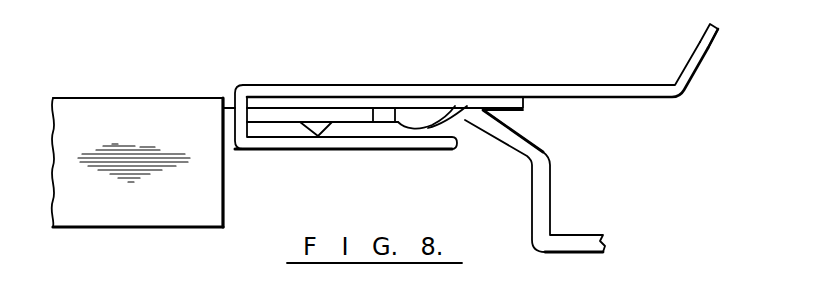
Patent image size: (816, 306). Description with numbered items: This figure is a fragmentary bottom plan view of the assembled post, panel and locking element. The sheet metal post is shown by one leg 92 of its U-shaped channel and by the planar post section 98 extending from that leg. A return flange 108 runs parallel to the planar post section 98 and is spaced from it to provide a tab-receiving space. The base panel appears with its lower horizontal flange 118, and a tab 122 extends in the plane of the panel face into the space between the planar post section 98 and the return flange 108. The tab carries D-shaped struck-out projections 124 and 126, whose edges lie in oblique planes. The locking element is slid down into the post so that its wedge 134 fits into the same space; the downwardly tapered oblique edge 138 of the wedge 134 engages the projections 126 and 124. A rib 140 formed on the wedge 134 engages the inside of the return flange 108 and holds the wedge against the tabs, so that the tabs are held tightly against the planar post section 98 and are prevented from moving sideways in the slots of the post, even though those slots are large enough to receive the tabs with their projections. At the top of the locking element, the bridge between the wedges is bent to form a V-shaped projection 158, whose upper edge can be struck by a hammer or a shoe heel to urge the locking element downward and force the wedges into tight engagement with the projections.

The leg 92 is at (705, 57).
The planar post section 98 is at (588, 90).
The return flange 108 is at (280, 143).
The lower horizontal flange 118 is at (143, 113).
The tab 122 is at (323, 105).
The D-shaped struck-out projection 124 is at (467, 115).
The D-shaped struck-out projection 126 is at (423, 116).
The wedge 134 is at (352, 113).
The oblique edge 138 is at (387, 115).
The rib 140 is at (318, 130).
The V-shaped projection 158 is at (552, 200).